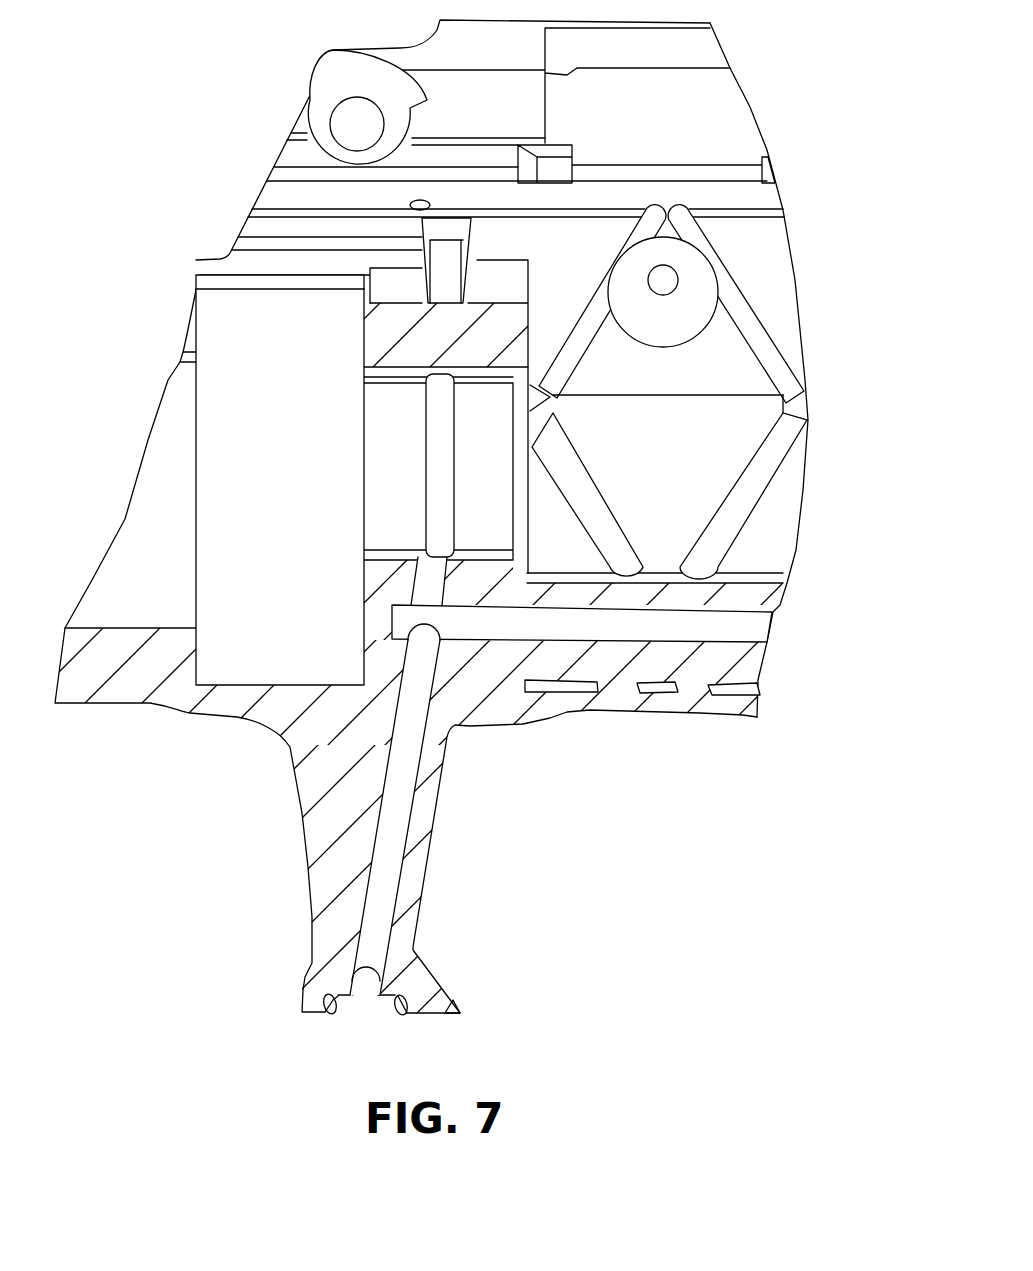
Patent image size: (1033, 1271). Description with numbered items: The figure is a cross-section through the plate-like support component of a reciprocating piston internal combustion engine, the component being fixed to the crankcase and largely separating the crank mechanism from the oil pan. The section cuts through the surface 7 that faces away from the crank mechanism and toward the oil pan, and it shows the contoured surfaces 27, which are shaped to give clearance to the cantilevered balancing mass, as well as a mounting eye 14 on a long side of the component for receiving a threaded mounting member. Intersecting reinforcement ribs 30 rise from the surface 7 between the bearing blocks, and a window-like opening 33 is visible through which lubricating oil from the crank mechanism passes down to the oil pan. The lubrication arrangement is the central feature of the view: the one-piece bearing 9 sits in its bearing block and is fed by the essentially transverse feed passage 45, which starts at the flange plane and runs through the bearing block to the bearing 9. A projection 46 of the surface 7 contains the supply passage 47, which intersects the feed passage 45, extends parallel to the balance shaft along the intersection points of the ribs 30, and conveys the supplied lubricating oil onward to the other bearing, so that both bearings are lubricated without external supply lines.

The mounting eye 14 is at (333, 88).
The window-like opening 33 is at (733, 120).
The reinforcement rib 30 is at (765, 340).
The surface 7 is at (725, 432).
The contoured surface 27 is at (304, 499).
The bearing 9 is at (385, 447).
The supply passage 47 is at (755, 620).
The projection 46 is at (675, 700).
The feed passage 45 is at (393, 840).